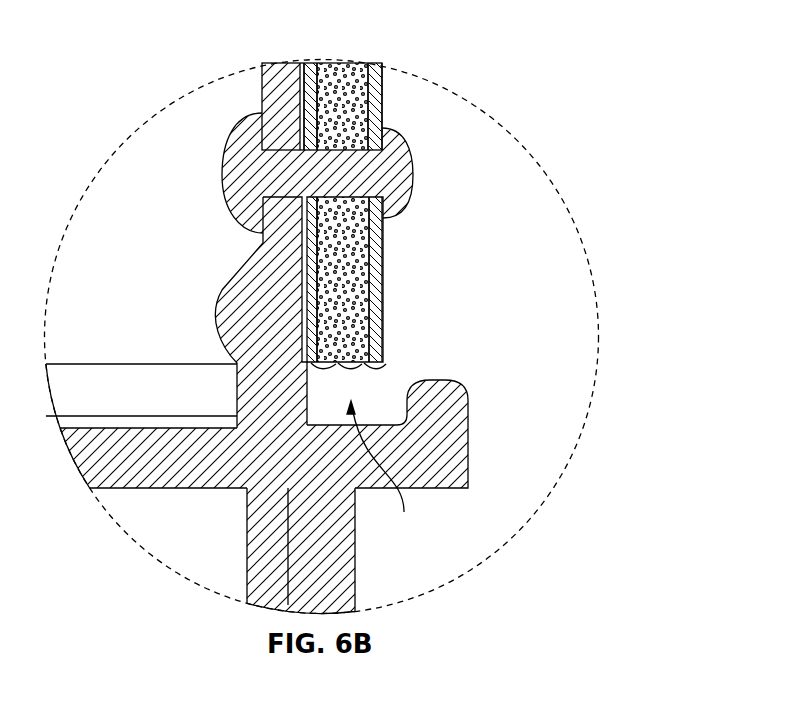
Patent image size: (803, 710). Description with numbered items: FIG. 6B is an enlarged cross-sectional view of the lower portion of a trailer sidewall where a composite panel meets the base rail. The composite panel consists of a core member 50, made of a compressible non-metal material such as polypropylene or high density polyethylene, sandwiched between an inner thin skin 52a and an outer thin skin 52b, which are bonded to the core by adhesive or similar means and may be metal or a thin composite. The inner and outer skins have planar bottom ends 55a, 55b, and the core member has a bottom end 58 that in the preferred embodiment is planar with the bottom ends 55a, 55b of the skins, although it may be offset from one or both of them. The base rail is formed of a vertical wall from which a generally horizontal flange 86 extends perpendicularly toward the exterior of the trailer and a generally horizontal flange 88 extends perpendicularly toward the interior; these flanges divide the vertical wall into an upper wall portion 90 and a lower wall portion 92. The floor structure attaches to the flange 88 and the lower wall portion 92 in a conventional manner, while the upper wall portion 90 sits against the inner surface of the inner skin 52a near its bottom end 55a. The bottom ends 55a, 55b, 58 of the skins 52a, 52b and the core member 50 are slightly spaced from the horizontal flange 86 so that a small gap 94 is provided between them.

The core member 50 is at (338, 82).
The inner thin skin 52a is at (312, 83).
The outer thin skin 52b is at (383, 92).
The bottom end of inner skin 55a is at (368, 345).
The bottom end of outer skin 55b is at (376, 355).
The bottom end of core member 58 is at (345, 367).
The horizontal flange 86 is at (440, 445).
The horizontal flange 88 is at (153, 480).
The upper wall portion 90 is at (262, 317).
The lower wall portion 92 is at (348, 535).
The gap 94 is at (384, 472).